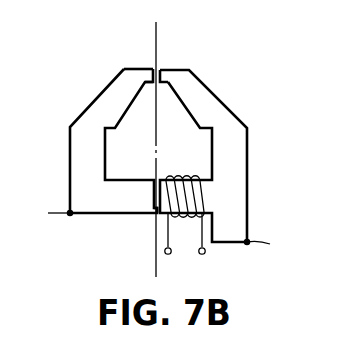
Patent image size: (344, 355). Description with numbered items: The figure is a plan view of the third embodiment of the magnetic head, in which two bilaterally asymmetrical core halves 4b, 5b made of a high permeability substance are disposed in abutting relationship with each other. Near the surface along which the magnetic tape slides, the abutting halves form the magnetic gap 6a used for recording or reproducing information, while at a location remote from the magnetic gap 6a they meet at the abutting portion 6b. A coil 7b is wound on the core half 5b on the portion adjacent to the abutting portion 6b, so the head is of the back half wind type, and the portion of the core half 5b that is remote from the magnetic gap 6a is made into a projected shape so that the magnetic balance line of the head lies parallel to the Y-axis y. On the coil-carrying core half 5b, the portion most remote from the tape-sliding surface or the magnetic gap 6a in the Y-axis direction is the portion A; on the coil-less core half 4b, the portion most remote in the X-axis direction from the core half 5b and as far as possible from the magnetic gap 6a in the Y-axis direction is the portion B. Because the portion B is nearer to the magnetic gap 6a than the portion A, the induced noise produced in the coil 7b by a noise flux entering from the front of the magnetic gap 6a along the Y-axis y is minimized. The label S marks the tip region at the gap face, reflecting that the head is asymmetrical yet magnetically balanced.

The core half 4b is at (107, 204).
The core half 5b is at (225, 238).
The magnetic gap 6a is at (160, 68).
The abutting portion 6b is at (155, 215).
The coil 7b is at (208, 178).
The pole tip spacing S is at (138, 67).
The portion A is at (263, 244).
The portion B is at (54, 213).
The Y-axis y is at (155, 140).